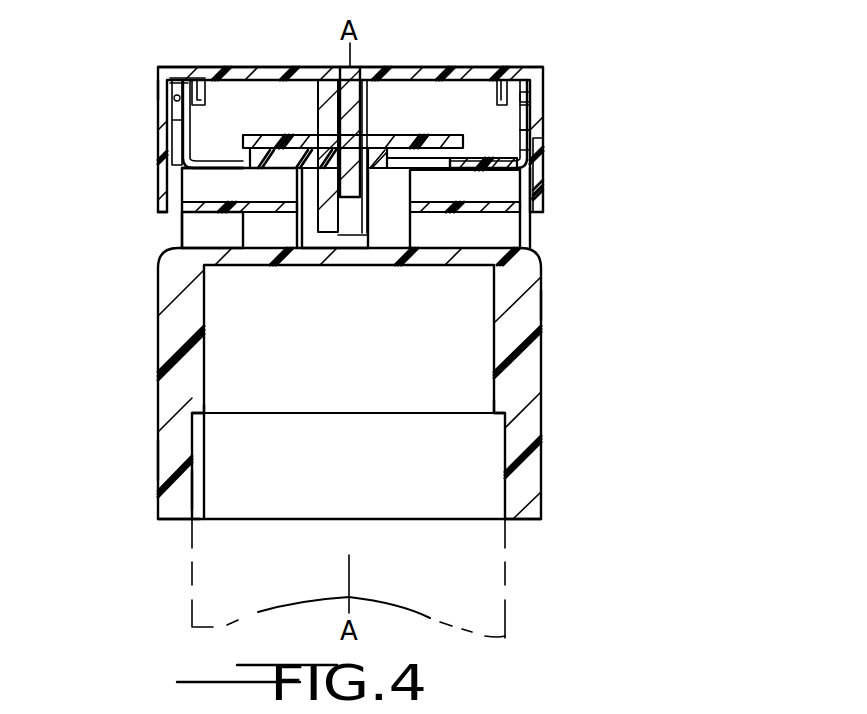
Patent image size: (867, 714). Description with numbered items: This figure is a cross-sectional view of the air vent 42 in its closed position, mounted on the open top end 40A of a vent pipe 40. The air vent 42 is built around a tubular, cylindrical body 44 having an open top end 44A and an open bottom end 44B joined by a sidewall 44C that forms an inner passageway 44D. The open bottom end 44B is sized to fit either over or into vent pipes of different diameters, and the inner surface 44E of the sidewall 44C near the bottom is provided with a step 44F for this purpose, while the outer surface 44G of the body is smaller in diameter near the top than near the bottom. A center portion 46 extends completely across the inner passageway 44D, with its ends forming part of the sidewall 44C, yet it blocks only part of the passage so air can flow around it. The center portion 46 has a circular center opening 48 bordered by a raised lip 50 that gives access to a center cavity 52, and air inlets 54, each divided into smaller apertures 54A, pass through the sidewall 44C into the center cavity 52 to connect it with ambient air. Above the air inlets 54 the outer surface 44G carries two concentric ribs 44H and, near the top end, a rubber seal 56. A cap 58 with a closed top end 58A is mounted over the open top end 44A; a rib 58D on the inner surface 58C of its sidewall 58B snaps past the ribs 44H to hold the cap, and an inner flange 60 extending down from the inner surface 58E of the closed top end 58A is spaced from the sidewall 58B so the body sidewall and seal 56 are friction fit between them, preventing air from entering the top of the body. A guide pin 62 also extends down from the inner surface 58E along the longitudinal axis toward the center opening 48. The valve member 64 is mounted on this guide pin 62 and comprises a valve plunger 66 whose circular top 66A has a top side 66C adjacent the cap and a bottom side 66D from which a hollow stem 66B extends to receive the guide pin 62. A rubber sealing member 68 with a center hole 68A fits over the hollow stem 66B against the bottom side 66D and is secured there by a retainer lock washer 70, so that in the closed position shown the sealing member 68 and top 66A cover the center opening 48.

The vent pipe 40 is at (507, 568).
The open top end of the vent pipe 40A is at (515, 530).
The air vent 42 is at (612, 98).
The body 44 is at (530, 362).
The open top end of the body 44A is at (507, 82).
The open bottom end of the body 44B is at (190, 523).
The sidewall of the body 44C is at (543, 302).
The inner passageway 44D is at (475, 395).
The inner surface of the sidewall 44E is at (194, 490).
The step 44F is at (203, 417).
The outer surface of the body 44G is at (157, 462).
The concentric ribs 44H is at (172, 117).
The center portion 46 is at (547, 184).
The center opening 48 is at (515, 132).
The raised lip 50 is at (500, 150).
The center cavity 52 is at (412, 190).
The air inlets 54 is at (507, 233).
The smaller apertures 54A is at (203, 235).
The seal 56 is at (540, 80).
The cap 58 is at (160, 163).
The closed top end of the cap 58A is at (433, 66).
The sidewall of the cap 58B is at (158, 91).
The inner surface of the sidewall of the cap 58C is at (177, 213).
The rib 58D is at (160, 133).
The inner surface of the closed top end 58E is at (216, 80).
The inner flange 60 is at (186, 78).
The guide pin 62 is at (363, 84).
The valve member 64 is at (330, 105).
The valve plunger 66 is at (313, 215).
The top of the valve plunger 66A is at (396, 130).
The hollow stem 66B is at (378, 252).
The top side of the top 66C is at (285, 124).
The bottom side of the top 66D is at (273, 170).
The sealing member 68 is at (290, 223).
The center hole 68A is at (363, 128).
The retainer lock washer 70 is at (403, 205).